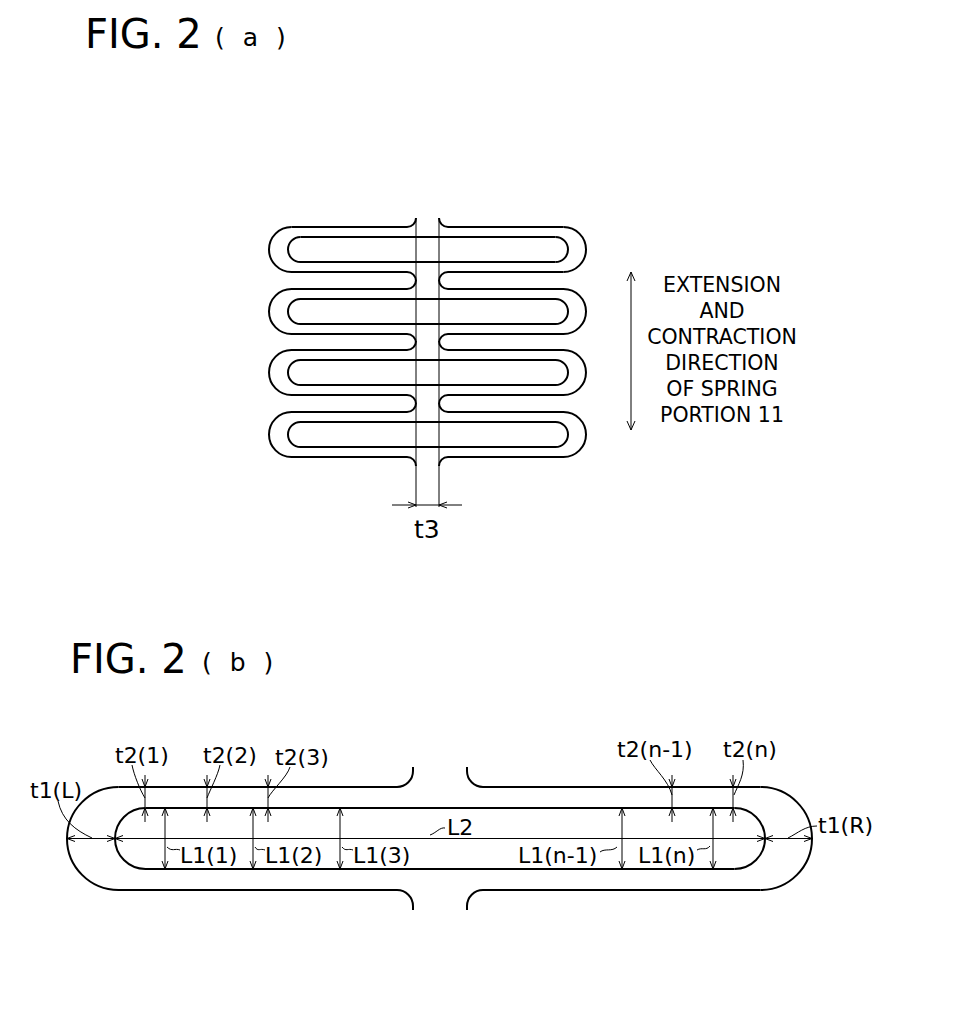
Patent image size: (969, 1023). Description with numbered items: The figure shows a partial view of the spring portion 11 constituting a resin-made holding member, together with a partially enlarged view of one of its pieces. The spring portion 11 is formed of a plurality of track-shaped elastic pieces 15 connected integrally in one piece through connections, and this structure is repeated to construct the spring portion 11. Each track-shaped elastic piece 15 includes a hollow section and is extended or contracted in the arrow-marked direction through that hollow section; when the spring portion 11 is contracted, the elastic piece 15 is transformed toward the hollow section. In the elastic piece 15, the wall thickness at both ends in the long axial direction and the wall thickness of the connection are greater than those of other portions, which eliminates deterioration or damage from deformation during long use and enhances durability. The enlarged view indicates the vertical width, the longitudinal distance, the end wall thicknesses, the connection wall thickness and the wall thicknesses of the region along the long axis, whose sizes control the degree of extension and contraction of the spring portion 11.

The spring portion 11 is at (356, 190).
The track-shaped elastic piece 15 is at (296, 206).